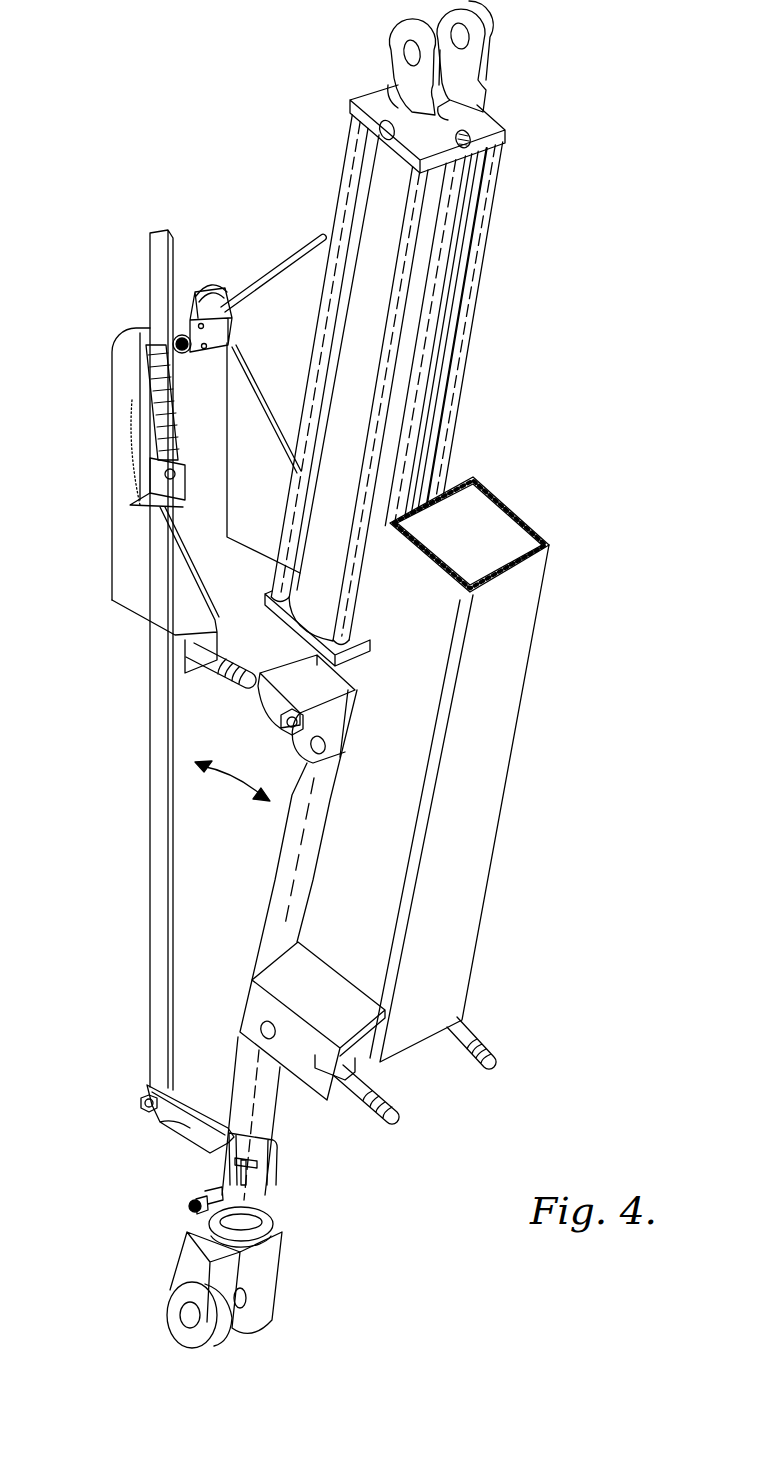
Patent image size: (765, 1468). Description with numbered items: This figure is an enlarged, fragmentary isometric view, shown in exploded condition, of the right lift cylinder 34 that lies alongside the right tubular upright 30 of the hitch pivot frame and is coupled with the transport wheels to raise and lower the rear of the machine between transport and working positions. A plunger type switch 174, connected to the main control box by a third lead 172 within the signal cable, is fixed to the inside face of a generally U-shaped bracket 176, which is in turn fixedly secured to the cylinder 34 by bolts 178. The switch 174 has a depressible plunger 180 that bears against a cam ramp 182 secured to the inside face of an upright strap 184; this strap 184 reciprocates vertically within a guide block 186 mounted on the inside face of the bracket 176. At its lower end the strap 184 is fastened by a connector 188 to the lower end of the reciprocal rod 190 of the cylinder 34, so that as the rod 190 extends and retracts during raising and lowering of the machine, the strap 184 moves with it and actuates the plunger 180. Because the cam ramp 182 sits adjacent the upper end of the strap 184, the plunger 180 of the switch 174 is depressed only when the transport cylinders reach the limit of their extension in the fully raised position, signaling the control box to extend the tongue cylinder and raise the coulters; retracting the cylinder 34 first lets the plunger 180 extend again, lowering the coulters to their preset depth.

The tubular upright beam 30 is at (470, 843).
The lift cylinder 34 is at (420, 283).
The third lead 172 is at (277, 262).
The plunger type switch 174 is at (218, 330).
The U-shaped bracket 176 is at (132, 560).
The bolts 178 is at (209, 672).
The depressible plunger 180 is at (180, 354).
The cam ramp 182 is at (192, 300).
The upright strap 184 is at (157, 265).
The guide block 186 is at (143, 393).
The connector 188 is at (180, 1127).
The reciprocal rod 190 is at (283, 914).